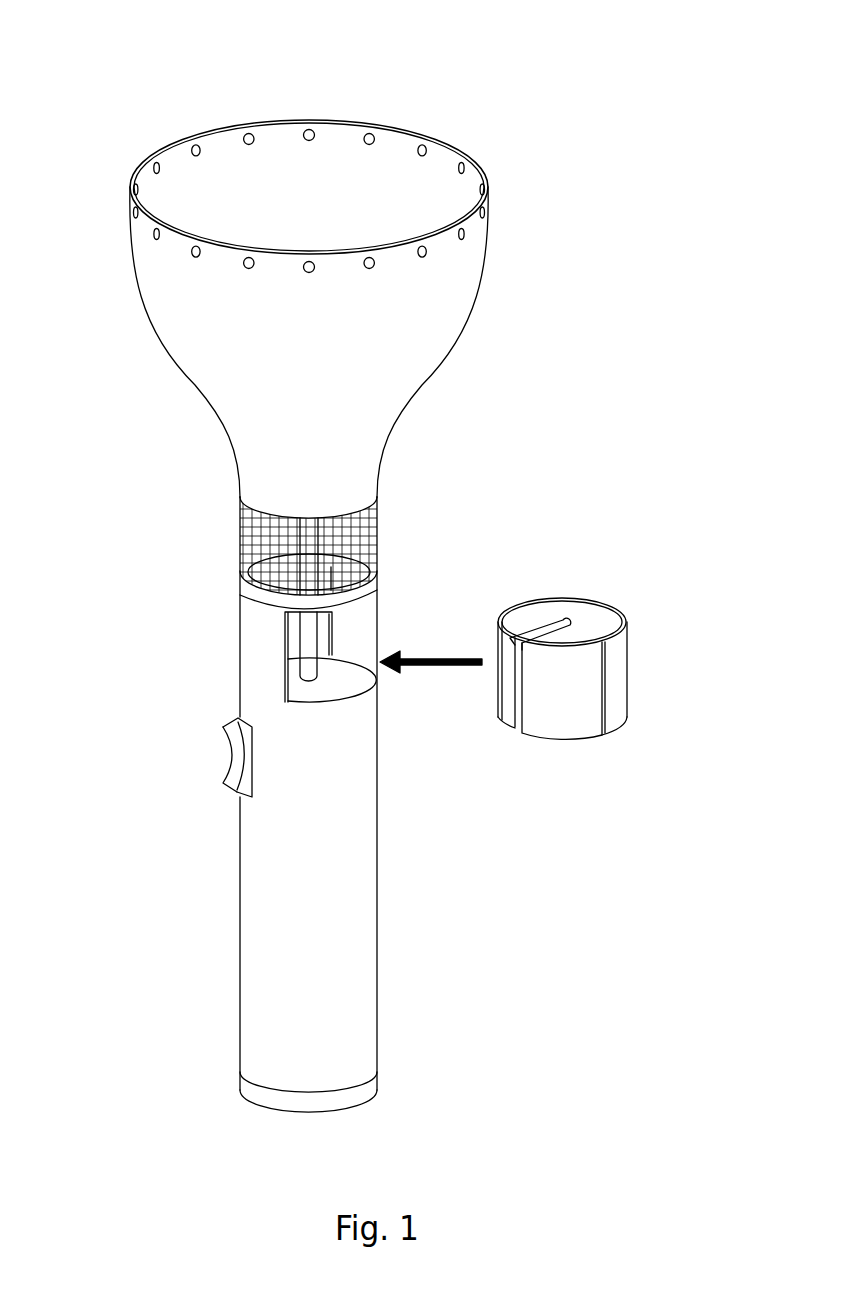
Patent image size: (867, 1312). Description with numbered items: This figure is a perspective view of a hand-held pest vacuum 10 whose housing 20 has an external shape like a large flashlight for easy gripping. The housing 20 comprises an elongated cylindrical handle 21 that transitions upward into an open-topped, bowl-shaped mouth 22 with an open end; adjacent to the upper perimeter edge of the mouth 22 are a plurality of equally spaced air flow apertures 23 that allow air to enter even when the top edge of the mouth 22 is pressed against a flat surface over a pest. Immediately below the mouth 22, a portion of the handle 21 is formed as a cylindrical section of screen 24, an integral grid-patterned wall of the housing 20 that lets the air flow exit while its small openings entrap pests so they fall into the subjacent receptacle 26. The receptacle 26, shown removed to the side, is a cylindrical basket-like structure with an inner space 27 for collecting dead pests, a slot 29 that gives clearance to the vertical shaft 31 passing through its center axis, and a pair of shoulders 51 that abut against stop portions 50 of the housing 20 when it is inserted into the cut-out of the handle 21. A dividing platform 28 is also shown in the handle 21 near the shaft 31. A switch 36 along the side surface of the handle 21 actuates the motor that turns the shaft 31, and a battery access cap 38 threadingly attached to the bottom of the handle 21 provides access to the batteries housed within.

The hand-held pest vacuum 10 is at (650, 118).
The housing 20 is at (228, 383).
The handle 21 is at (325, 980).
The mouth 22 is at (220, 133).
The air flow apertures 23 is at (424, 147).
The screen 24 is at (366, 524).
The receptacle 26 is at (592, 603).
The inner space 27 is at (598, 623).
The dividing platform 28 is at (335, 693).
The slot 29 is at (520, 627).
The shaft 31 is at (302, 643).
The switch 36 is at (236, 755).
The battery access cap 38 is at (362, 1087).
The stop 50 is at (333, 625).
The shoulder 51 is at (605, 698).